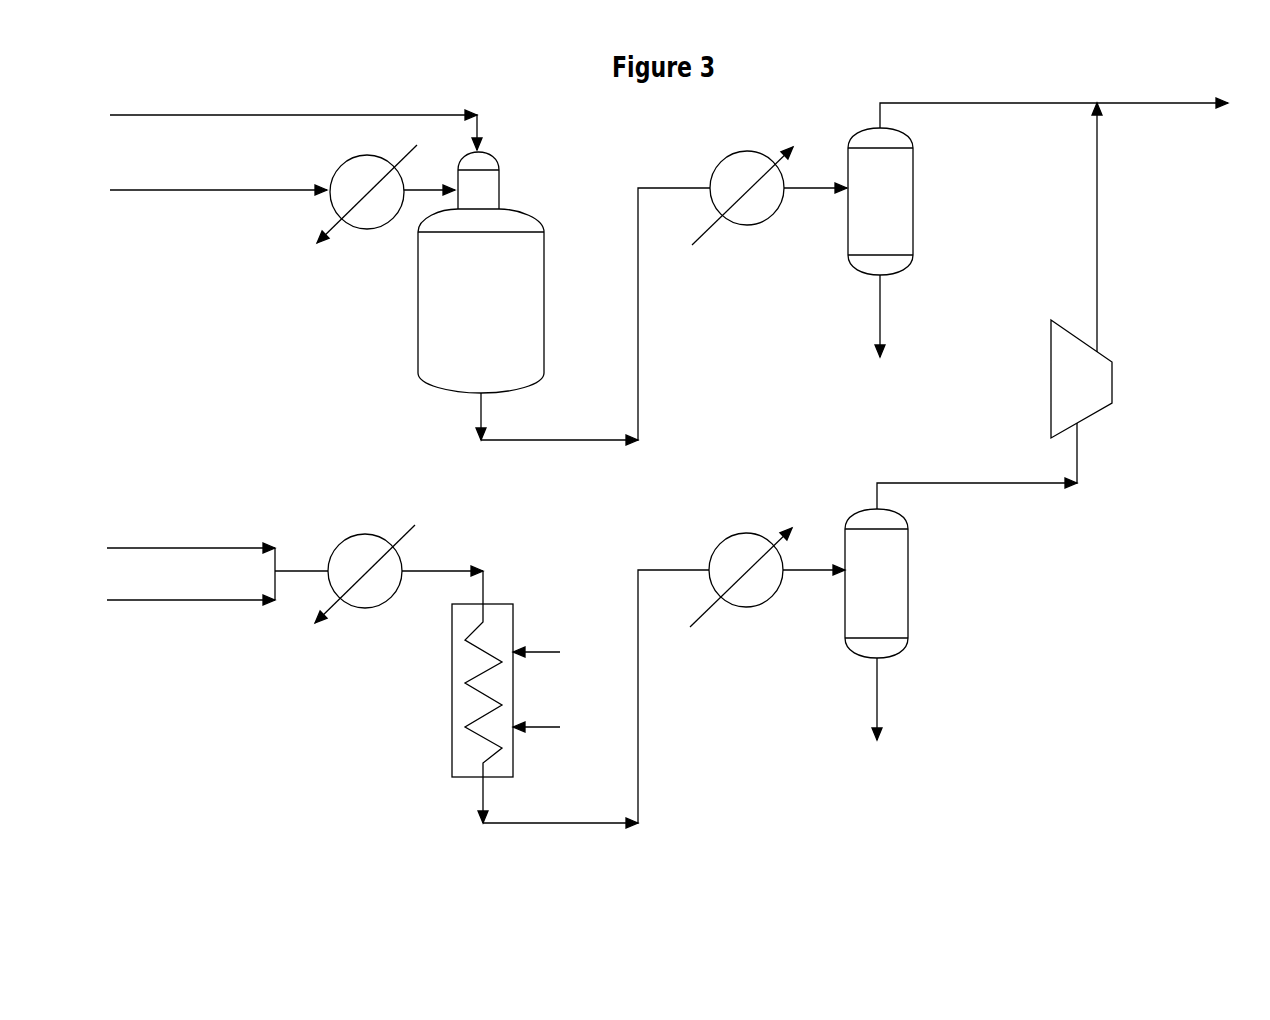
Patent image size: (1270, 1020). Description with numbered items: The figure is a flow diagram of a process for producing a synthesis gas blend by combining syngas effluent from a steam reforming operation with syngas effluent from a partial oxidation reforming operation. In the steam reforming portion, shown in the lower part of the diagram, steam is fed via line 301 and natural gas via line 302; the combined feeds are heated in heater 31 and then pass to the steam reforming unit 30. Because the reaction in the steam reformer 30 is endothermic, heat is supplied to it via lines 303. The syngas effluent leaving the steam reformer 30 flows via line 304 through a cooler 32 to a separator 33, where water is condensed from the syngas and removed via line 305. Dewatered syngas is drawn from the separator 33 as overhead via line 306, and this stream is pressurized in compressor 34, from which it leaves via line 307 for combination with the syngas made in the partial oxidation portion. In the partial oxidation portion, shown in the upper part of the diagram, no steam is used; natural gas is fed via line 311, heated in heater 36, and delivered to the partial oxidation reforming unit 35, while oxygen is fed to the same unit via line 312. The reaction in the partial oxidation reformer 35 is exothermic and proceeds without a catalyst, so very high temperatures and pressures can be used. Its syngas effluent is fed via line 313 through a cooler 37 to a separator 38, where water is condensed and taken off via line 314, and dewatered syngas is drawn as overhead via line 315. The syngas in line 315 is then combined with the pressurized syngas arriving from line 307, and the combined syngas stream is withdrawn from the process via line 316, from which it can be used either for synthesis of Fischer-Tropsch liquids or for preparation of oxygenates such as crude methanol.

The steam reforming unit 30 is at (452, 703).
The heater 31 is at (372, 612).
The cooler 32 is at (740, 612).
The separator 33 is at (912, 582).
The compressor 34 is at (1048, 377).
The partial oxidation reforming unit 35 is at (416, 328).
The heater 36 is at (355, 230).
The cooler 37 is at (745, 226).
The separator 38 is at (915, 195).
The line 301 is at (183, 548).
The line 302 is at (183, 600).
The lines 303 is at (540, 655).
The line 304 is at (553, 823).
The line 305 is at (880, 720).
The line 306 is at (968, 483).
The line 307 is at (1100, 262).
The line 311 is at (180, 190).
The line 312 is at (175, 115).
The line 313 is at (560, 440).
The line 314 is at (883, 333).
The line 315 is at (980, 103).
The line 316 is at (1177, 103).